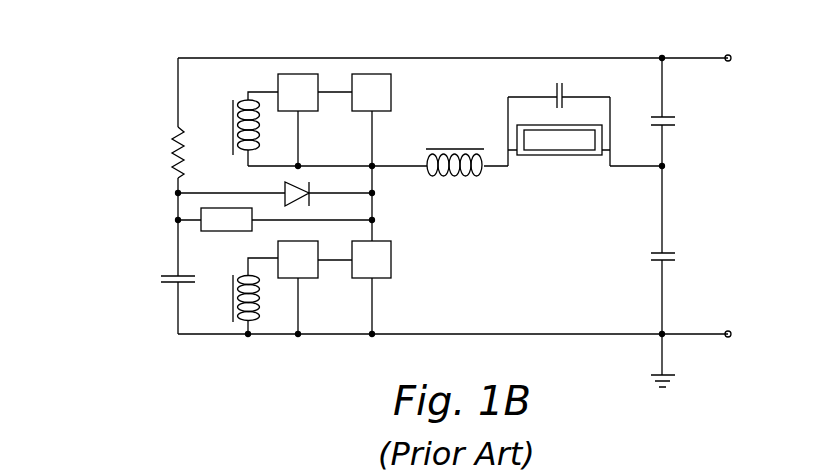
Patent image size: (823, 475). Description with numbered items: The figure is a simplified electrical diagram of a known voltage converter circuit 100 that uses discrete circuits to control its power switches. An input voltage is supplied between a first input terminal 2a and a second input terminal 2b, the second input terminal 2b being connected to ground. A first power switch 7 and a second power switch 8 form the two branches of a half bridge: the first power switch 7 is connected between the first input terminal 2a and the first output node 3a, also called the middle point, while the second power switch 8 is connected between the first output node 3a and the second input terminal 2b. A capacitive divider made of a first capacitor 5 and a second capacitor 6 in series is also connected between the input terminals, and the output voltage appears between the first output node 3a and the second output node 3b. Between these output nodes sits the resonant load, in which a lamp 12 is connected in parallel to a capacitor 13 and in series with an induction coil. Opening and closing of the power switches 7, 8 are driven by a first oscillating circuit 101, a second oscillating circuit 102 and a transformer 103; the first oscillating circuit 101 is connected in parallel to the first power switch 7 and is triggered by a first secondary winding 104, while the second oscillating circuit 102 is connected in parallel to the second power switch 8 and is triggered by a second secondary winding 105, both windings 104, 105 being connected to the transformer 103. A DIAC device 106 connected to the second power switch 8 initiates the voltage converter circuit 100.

The voltage converter circuit 100 is at (113, 207).
The first oscillating circuit 101 is at (298, 74).
The second oscillating circuit 102 is at (292, 278).
The transformer 103 is at (455, 149).
The first secondary winding 104 is at (232, 130).
The second secondary winding 105 is at (231, 300).
The DIAC device 106 is at (226, 231).
The first power switch 7 is at (391, 93).
The second power switch 8 is at (391, 258).
The lamp 12 is at (557, 155).
The capacitor 13 is at (552, 93).
The first capacitor 5 is at (670, 125).
The second capacitor 6 is at (670, 252).
The first output node 3a is at (372, 166).
The second output node 3b is at (664, 168).
The first input terminal 2a is at (728, 55).
The second input terminal 2b is at (727, 338).